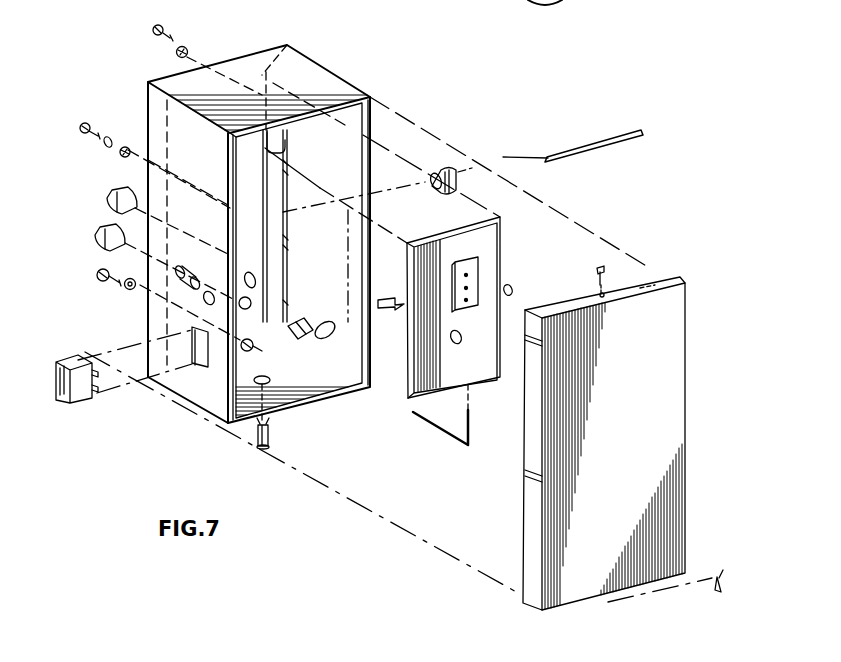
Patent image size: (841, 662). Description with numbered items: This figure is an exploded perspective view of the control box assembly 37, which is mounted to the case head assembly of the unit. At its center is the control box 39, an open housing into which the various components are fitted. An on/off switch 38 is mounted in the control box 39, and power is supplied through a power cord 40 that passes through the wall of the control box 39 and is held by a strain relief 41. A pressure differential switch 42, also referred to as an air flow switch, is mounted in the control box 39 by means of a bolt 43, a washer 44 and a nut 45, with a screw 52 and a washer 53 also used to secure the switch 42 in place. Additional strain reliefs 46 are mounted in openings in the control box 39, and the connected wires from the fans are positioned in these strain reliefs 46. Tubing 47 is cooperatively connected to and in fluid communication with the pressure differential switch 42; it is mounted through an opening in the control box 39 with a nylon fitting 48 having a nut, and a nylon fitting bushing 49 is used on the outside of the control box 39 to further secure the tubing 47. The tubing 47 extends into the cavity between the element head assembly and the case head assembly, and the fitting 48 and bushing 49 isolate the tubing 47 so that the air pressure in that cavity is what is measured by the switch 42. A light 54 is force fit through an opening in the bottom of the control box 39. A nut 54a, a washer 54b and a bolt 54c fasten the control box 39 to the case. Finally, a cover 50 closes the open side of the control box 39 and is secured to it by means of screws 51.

The control box assembly 37 is at (132, 45).
The on/off switch 38 is at (75, 403).
The control box 39 is at (330, 70).
The power cord 40 is at (585, 147).
The strain relief 41 is at (443, 170).
The pressure differential switch 42 is at (497, 268).
The bolt 43 is at (87, 124).
The washer 44 is at (105, 147).
The nut 45 is at (125, 147).
The strain reliefs 46 is at (110, 198).
The tubing 47 is at (440, 432).
The nylon fitting 48 is at (296, 326).
The nylon fitting bushing 49 is at (172, 265).
The cover 50 is at (675, 334).
The screws 51 is at (719, 576).
The screw 52 is at (160, 27).
The washer 53 is at (187, 48).
The light 54 is at (270, 432).
The nut 54a is at (255, 349).
The washer 54b is at (131, 291).
The bolt 54c is at (102, 283).